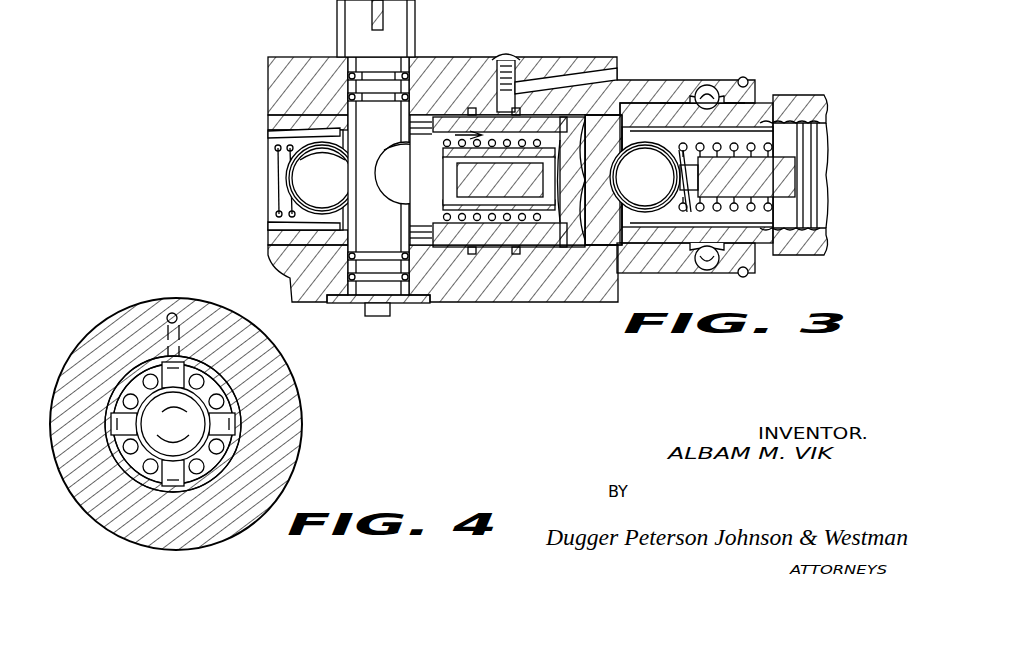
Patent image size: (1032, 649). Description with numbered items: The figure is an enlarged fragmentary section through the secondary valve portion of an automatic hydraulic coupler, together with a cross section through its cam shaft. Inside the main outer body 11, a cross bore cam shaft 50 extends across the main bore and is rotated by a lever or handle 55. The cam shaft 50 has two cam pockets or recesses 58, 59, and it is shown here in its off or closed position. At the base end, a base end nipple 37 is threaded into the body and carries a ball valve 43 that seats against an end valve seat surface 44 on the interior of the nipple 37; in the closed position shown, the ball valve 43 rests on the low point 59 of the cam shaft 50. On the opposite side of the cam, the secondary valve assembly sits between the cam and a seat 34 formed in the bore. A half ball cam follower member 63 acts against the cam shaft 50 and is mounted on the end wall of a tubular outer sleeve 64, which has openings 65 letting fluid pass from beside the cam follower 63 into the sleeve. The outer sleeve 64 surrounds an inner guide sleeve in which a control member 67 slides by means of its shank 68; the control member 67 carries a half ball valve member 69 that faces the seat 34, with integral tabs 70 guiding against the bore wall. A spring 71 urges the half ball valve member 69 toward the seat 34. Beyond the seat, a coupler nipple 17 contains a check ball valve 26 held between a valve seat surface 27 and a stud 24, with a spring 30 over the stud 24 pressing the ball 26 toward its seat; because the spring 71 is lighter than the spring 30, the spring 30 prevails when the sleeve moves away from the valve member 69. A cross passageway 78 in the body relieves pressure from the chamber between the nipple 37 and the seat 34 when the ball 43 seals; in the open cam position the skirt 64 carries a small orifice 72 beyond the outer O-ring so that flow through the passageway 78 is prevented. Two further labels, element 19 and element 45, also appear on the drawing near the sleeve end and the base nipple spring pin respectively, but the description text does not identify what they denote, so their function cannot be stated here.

In FIG. 3, the main outer body 11 is at (462, 70).
In FIG. 4, the main outer body 11 is at (278, 462).
In FIG. 3, the coupler nipple 17 is at (812, 100).
In FIG. 3, the spool end 19 is at (565, 250).
In FIG. 3, the stud 24 is at (800, 176).
In FIG. 3, the check ball valve 26 is at (660, 130).
In FIG. 3, the valve seat surface 27 is at (662, 110).
In FIG. 3, the spring 30 is at (795, 100).
In FIG. 3, the valve seat 34 is at (628, 283).
In FIG. 3, the base end nipple 37 is at (268, 240).
In FIG. 3, the ball valve 43 is at (295, 175).
In FIG. 3, the end valve seat surface 44 is at (322, 178).
In FIG. 3, the spring pin 45 is at (283, 208).
In FIG. 3, the cross bore cam shaft 50 is at (330, 303).
In FIG. 3, the lever or handle 55 is at (370, 16).
In FIG. 3, the cam pocket 58 is at (348, 196).
In FIG. 3, the cam pocket 59 is at (368, 160).
In FIG. 3, the half ball cam follower member 63 is at (400, 185).
In FIG. 3, the tubular outer sleeve 64 is at (505, 250).
In FIG. 4, the tubular outer sleeve 64 is at (148, 368).
In FIG. 3, the openings 65 is at (428, 115).
In FIG. 4, the openings 65 is at (118, 420).
In FIG. 3, the control member 67 is at (605, 120).
In FIG. 3, the shank 68 is at (480, 200).
In FIG. 3, the half ball valve member 69 is at (612, 185).
In FIG. 3, the tabs 70 is at (578, 118).
In FIG. 4, the tabs 70 is at (111, 430).
In FIG. 3, the spring 71 is at (450, 248).
In FIG. 3, the orifice 72 is at (538, 85).
In FIG. 3, the cross passageway 78 is at (530, 60).
In FIG. 4, the cross passageway 78 is at (171, 312).